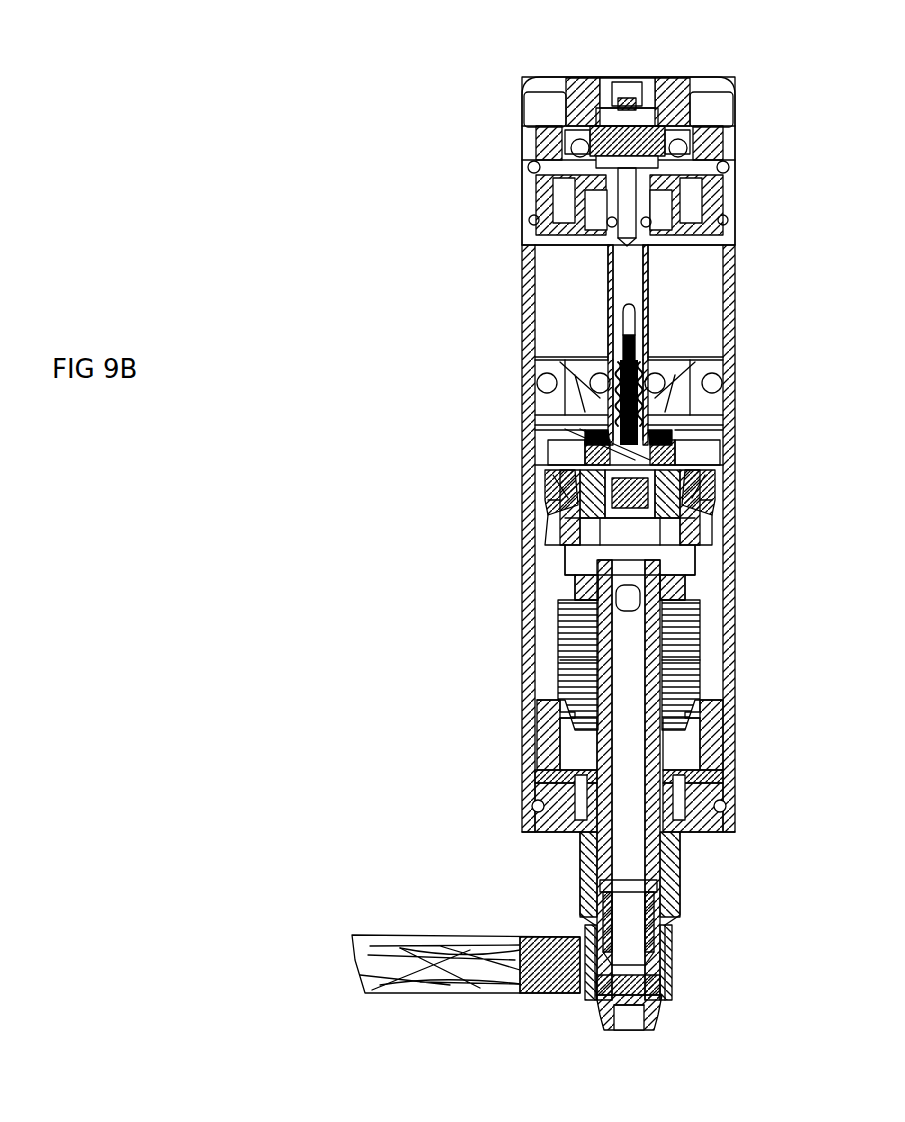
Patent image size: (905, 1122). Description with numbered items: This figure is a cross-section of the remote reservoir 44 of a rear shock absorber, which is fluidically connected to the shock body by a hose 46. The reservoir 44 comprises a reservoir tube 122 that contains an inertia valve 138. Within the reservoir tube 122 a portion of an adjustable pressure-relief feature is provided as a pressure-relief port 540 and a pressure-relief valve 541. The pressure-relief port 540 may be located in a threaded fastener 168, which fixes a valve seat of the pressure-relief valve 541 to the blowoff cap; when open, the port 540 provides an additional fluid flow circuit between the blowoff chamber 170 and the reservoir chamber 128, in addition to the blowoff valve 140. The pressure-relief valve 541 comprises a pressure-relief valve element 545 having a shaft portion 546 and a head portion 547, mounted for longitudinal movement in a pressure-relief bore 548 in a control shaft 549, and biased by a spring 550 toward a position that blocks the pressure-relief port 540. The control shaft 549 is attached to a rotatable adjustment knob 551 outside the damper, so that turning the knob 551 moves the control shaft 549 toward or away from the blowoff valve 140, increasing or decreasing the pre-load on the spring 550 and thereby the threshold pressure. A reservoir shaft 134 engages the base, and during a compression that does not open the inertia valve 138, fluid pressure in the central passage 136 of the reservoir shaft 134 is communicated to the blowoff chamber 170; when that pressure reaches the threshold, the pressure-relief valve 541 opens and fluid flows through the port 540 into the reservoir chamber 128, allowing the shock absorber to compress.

The remote reservoir 44 is at (382, 578).
The hose 46 is at (395, 935).
The reservoir tube 122 is at (735, 618).
The reservoir chamber 128 is at (700, 432).
The reservoir shaft 134 is at (735, 785).
The central passage 136 is at (545, 757).
The inertia valve 138 is at (550, 617).
The blowoff valve 140 is at (517, 481).
The fastener 168 is at (700, 445).
The blowoff chamber 170 is at (705, 540).
The pressure-relief port 540 is at (700, 500).
The pressure-relief valve 541 is at (598, 425).
The pressure-relief valve element 545 is at (640, 340).
The shaft portion 546 is at (622, 345).
The head portion 547 is at (598, 435).
The pressure-relief bore 548 is at (638, 322).
The control shaft 549 is at (622, 290).
The spring 550 is at (700, 410).
The rotatable adjustment knob 551 is at (677, 78).